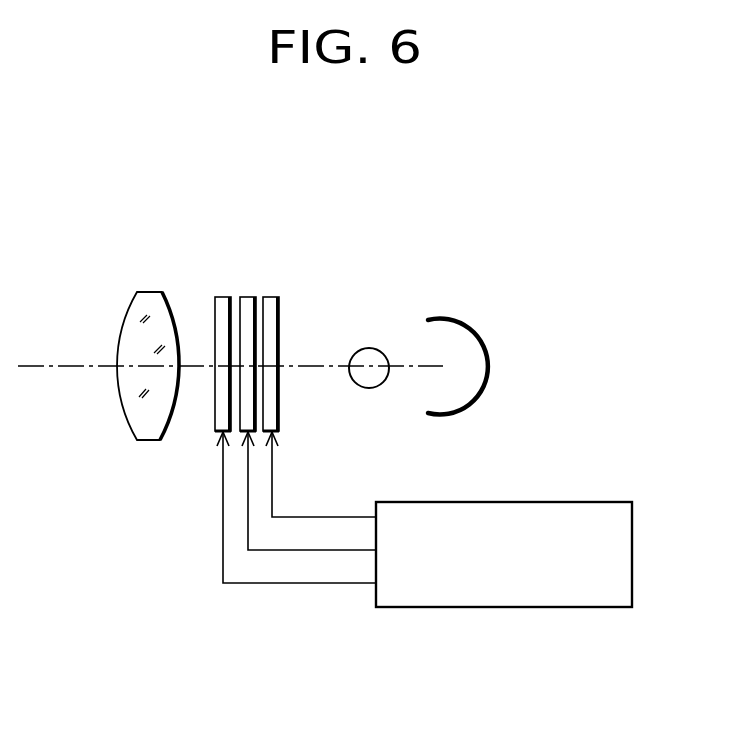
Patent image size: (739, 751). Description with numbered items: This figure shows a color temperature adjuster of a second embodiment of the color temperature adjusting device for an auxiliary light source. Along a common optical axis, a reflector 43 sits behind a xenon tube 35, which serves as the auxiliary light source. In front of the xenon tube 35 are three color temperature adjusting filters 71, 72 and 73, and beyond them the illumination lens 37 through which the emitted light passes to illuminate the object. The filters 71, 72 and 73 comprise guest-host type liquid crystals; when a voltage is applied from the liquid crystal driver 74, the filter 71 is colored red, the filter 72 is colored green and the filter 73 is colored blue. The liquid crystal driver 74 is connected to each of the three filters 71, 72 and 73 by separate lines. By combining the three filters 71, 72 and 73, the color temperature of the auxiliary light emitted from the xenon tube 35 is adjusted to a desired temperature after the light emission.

The illumination lens 37 is at (128, 315).
The color temperature adjusting filter 71 is at (218, 297).
The color temperature adjusting filter 72 is at (248, 297).
The color temperature adjusting filter 73 is at (270, 297).
The xenon tube 35 is at (370, 348).
The reflector 43 is at (480, 343).
The liquid crystal driver 74 is at (473, 604).